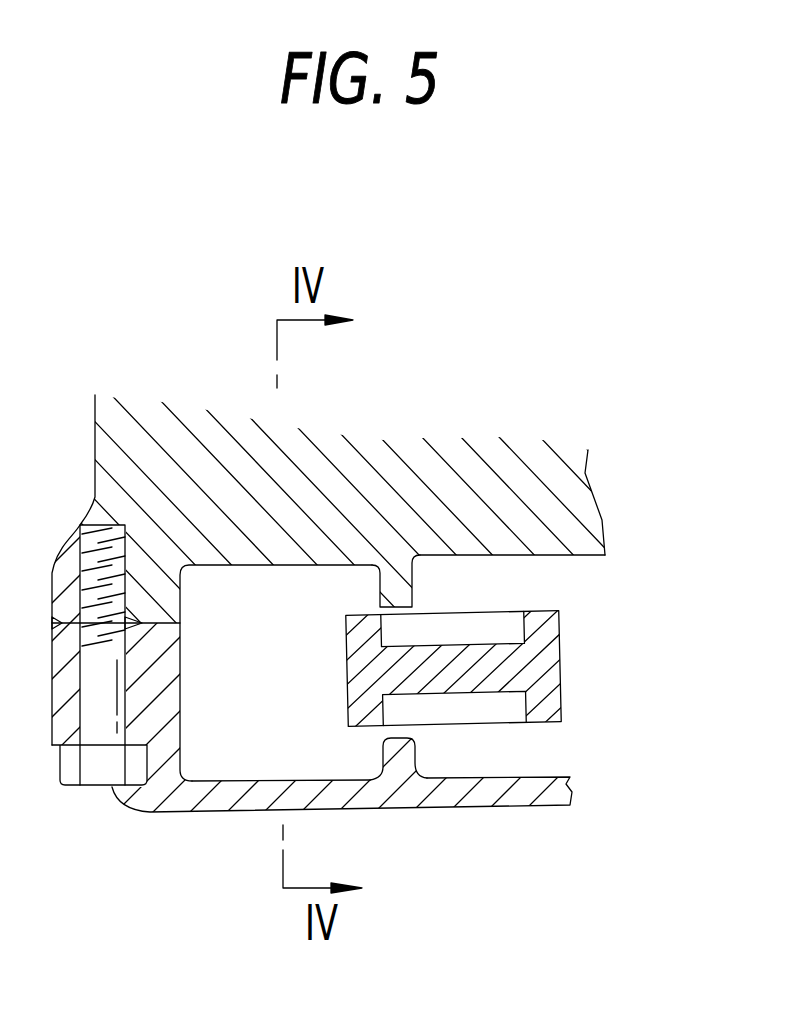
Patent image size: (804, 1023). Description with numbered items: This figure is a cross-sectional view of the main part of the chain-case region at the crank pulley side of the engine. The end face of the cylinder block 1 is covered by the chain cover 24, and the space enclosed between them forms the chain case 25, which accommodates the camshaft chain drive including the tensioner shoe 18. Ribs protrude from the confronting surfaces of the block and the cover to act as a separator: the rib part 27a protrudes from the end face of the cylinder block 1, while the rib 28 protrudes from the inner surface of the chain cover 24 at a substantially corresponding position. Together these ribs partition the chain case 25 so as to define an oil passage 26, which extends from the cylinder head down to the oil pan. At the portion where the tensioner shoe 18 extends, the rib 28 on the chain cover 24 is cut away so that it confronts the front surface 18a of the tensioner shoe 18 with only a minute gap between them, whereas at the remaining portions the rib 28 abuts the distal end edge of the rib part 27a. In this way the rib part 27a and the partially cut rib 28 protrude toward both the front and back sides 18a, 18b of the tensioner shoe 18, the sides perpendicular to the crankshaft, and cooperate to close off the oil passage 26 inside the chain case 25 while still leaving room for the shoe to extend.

The cylinder block 1 is at (583, 502).
The tensioner shoe 18 is at (509, 685).
The front surface of the tensioner shoe 18a is at (513, 724).
The back side of the tensioner shoe 18b is at (507, 611).
The chain cover 24 is at (507, 806).
The chain case 25 is at (548, 597).
The oil passage 26 is at (300, 705).
The rib part on the cylinder block side 27a is at (383, 588).
The rib 28 is at (415, 740).